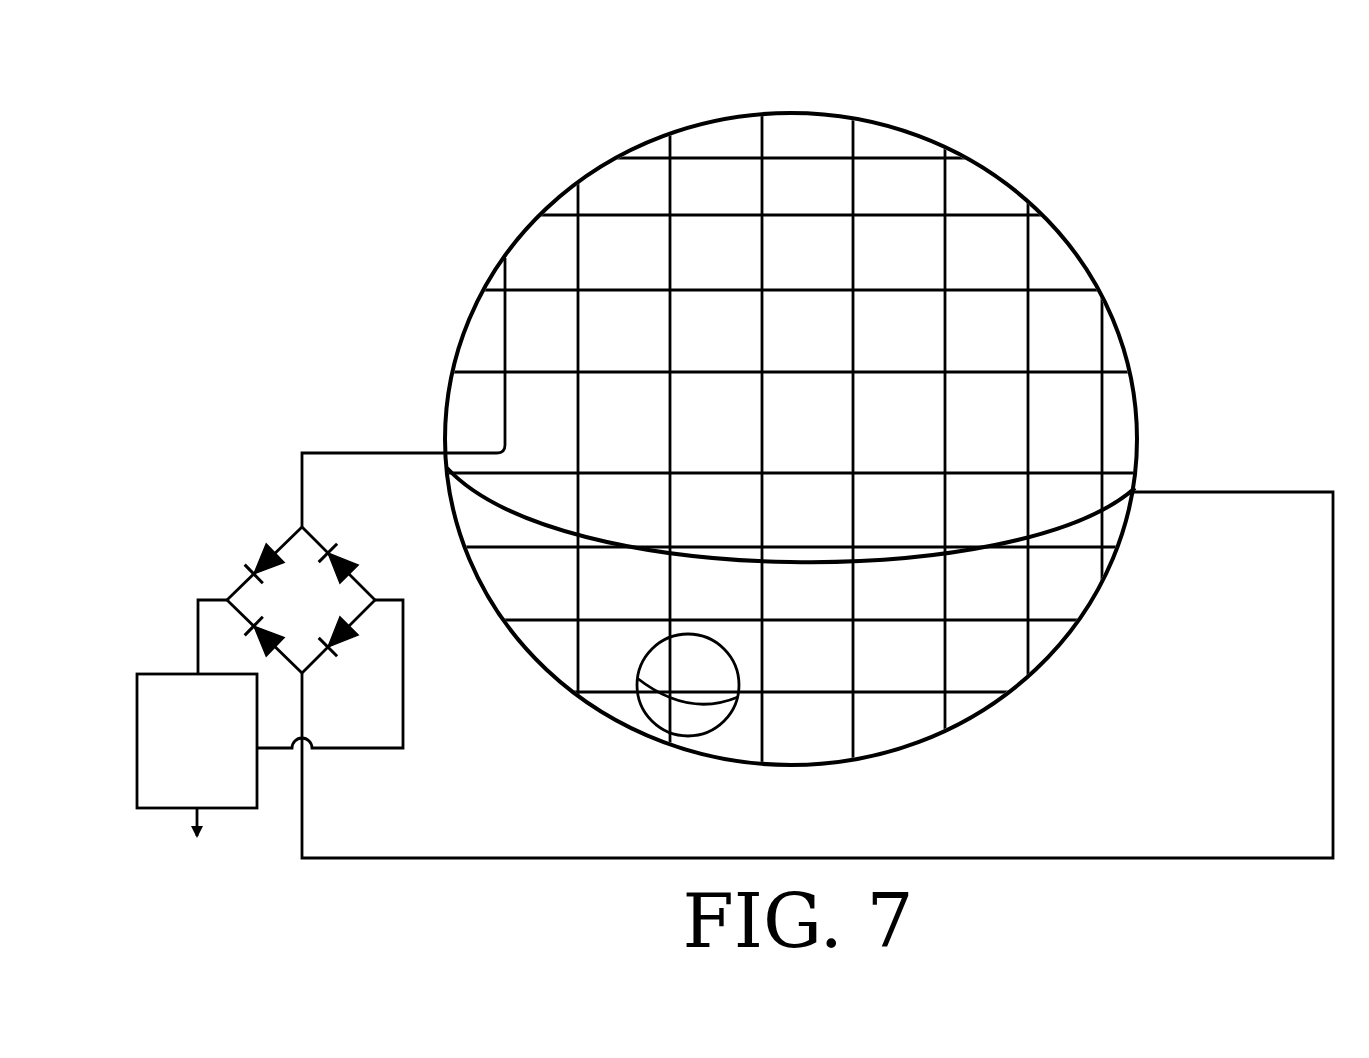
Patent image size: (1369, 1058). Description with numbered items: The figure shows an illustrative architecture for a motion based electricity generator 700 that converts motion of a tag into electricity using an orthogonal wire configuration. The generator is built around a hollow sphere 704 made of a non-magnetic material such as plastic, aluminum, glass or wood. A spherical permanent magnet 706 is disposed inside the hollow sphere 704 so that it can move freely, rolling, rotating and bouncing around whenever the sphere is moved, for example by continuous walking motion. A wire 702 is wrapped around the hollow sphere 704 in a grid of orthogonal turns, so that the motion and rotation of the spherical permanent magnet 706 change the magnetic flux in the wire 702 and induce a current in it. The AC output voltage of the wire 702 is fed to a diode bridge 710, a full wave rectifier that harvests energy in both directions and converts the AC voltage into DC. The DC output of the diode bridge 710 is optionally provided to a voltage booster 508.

The motion based electricity generator 700 is at (336, 133).
The wire 702 is at (570, 191).
The hollow sphere 704 is at (1014, 176).
The spherical permanent magnet 706 is at (727, 726).
The diode bridge 710 is at (245, 525).
The voltage booster 508 is at (197, 755).